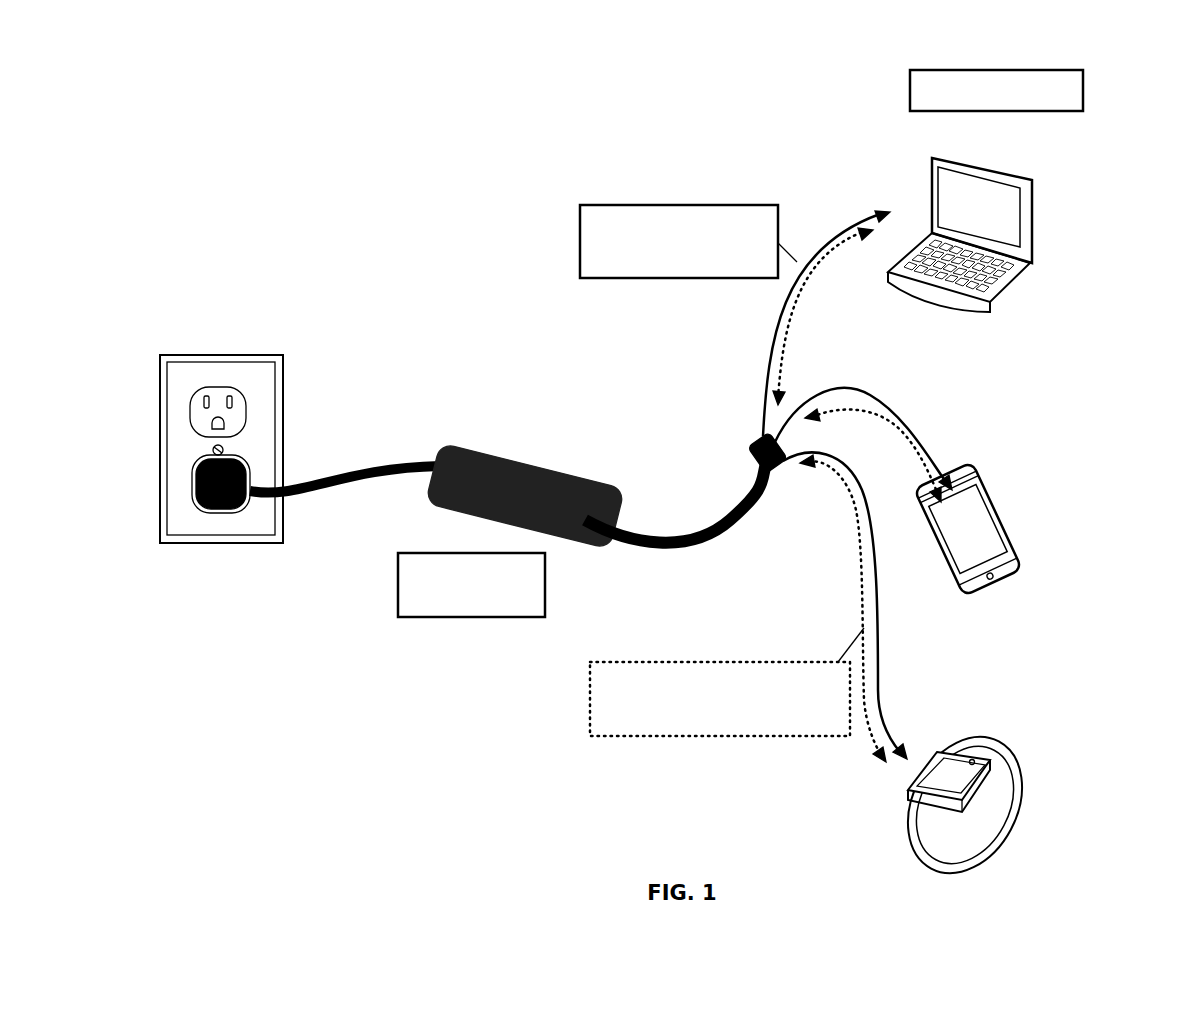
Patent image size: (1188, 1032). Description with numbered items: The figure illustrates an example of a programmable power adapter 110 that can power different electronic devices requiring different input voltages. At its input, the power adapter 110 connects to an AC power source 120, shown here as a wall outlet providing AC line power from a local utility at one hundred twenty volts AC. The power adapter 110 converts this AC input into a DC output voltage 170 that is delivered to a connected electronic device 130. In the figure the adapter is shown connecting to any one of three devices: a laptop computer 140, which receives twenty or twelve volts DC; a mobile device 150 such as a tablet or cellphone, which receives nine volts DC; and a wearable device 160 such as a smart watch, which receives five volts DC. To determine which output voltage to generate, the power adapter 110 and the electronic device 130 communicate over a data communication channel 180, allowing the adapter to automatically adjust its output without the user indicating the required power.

The power adapter 110 is at (432, 499).
The AC power source 120 is at (224, 355).
The electronic device 130 is at (1083, 95).
The laptop computer 140 is at (931, 158).
The mobile device 150 is at (986, 460).
The wearable device 160 is at (957, 749).
The DC output voltage 170 is at (580, 205).
The data communication channel 180 is at (590, 690).